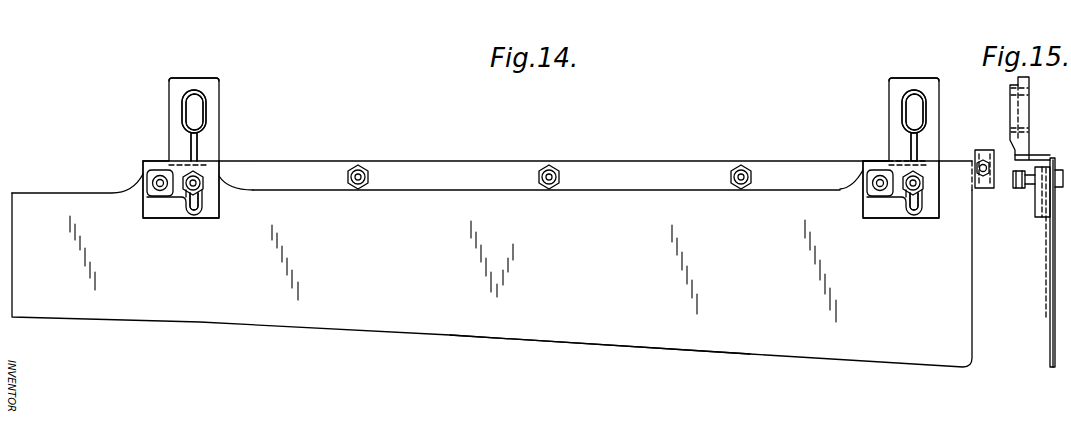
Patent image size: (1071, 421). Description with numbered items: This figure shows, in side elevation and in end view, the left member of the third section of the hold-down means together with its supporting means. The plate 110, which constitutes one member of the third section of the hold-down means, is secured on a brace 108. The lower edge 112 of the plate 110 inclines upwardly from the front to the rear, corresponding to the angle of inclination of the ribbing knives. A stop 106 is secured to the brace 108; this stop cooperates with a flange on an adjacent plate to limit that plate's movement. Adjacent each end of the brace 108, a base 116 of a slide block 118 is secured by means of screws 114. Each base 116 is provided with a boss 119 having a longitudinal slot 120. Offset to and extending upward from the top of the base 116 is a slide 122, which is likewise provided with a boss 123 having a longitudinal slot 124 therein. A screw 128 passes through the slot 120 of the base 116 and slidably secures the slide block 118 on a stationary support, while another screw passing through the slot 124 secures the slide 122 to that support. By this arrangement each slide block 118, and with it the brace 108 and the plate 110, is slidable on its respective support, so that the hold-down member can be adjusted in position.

In FIG. 15, the stop 106 is at (984, 158).
In FIG. 14, the brace 108 is at (601, 160).
In FIG. 14, the plate 110 is at (589, 331).
In FIG. 15, the plate 110 is at (1050, 331).
In FIG. 14, the lower edge 112 is at (734, 352).
In FIG. 14, the screws 114 is at (159, 196).
In FIG. 15, the screws 114 is at (1015, 186).
In FIG. 14, the base 116 is at (179, 216).
In FIG. 14, the slide block 118 is at (194, 81).
In FIG. 14, the boss 119 is at (203, 212).
In FIG. 15, the boss 119 is at (1035, 213).
In FIG. 14, the longitudinal slot 120 is at (197, 200).
In FIG. 14, the slide 122 is at (219, 122).
In FIG. 15, the slide 122 is at (1029, 112).
In FIG. 14, the boss 123 is at (206, 98).
In FIG. 15, the boss 123 is at (1010, 98).
In FIG. 14, the longitudinal slot 124 is at (190, 117).
In FIG. 14, the screw 128 is at (203, 175).